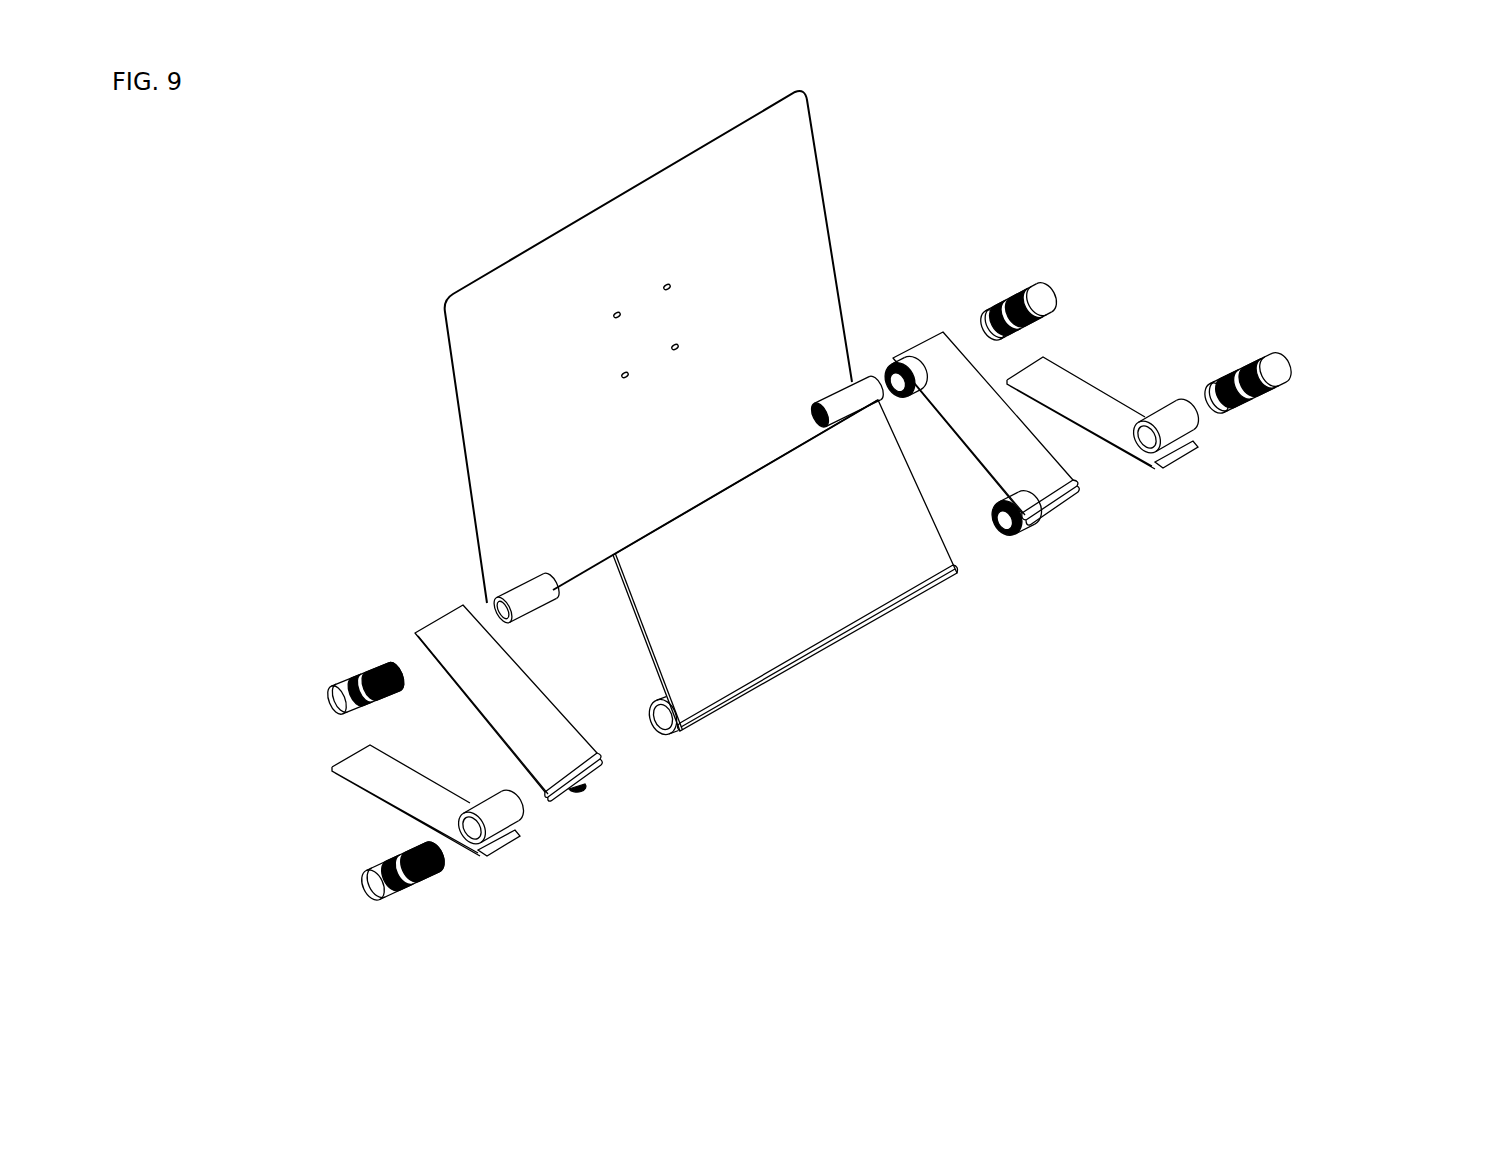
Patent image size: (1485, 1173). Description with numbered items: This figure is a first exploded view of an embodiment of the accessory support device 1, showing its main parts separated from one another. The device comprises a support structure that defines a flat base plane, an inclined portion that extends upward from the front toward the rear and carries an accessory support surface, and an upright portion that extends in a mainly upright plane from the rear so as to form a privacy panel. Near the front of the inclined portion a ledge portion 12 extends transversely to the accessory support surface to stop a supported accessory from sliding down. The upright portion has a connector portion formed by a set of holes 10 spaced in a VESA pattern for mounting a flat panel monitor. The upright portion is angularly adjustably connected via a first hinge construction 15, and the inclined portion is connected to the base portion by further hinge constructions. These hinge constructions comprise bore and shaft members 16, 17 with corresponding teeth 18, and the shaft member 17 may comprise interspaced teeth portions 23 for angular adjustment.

The accessory support device 1 is at (197, 430).
The holes 10 is at (683, 345).
The ledge portion 12 is at (945, 587).
The bore member 16 is at (520, 595).
The shaft member 17 is at (336, 702).
The teeth 18 is at (1298, 452).
The first hinge construction 15 is at (1157, 238).
The interspaced teeth portions 23 is at (445, 923).